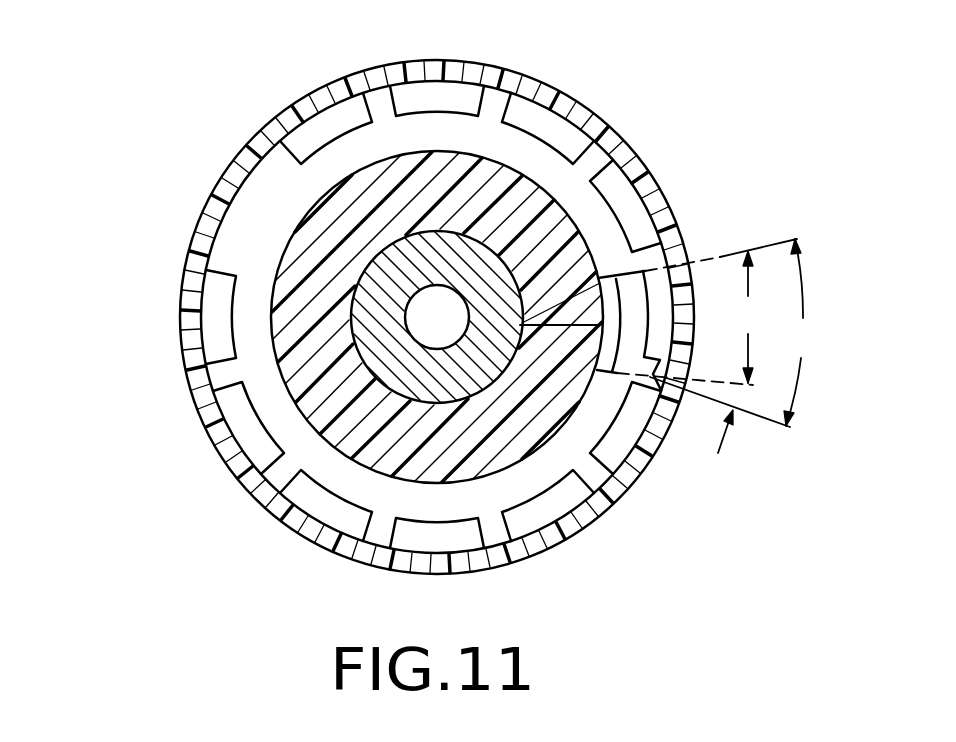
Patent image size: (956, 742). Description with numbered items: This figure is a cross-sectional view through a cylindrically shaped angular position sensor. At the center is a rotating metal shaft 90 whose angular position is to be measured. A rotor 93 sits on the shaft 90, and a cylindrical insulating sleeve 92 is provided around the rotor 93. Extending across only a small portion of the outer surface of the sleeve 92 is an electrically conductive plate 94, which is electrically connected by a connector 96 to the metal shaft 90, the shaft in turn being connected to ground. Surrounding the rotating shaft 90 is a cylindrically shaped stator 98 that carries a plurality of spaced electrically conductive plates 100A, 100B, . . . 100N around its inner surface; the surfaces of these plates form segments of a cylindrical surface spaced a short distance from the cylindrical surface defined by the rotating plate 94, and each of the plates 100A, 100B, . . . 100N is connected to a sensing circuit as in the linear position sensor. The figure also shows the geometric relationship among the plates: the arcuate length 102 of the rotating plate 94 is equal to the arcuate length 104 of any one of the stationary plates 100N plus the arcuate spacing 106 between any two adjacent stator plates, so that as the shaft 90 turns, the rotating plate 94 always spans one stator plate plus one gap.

The rotating shaft 90 is at (327, 428).
The cylindrical insulating sleeve 92 is at (323, 197).
The rotor 93 is at (357, 277).
The electrically conductive plate 94 is at (585, 445).
The connector 96 is at (600, 272).
The stator 98 is at (160, 371).
The electrically conductive plate 100A is at (203, 287).
The electrically conductive plate 100B is at (227, 415).
The electrically conductive plate 100N is at (655, 377).
The arcuate length 102 is at (732, 333).
The arcuate length 104 is at (697, 318).
The arcuate spacing 106 is at (742, 417).